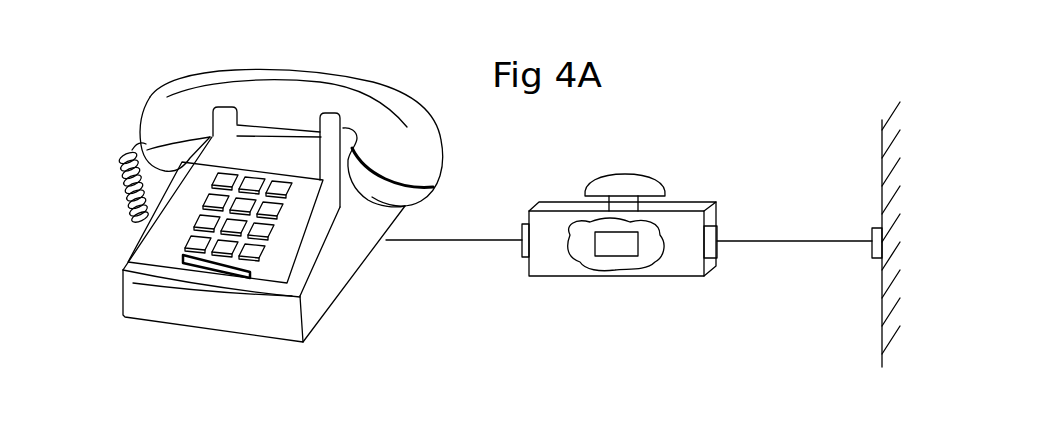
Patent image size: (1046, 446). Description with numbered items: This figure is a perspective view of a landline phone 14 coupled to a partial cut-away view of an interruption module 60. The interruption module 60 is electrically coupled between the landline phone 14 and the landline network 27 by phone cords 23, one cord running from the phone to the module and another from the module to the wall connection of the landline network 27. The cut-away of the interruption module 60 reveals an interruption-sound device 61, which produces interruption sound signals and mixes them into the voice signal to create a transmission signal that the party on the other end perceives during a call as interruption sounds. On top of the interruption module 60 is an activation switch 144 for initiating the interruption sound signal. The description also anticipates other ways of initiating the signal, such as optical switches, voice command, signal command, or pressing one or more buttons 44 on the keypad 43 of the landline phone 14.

The landline phone 14 is at (279, 237).
The keypad 43 is at (225, 283).
The button 44 is at (199, 242).
The phone cord 23 is at (468, 242).
The activation switch 144 is at (640, 178).
The interruption module 60 is at (632, 233).
The interruption-sound device 61 is at (607, 257).
The landline network 27 is at (870, 228).